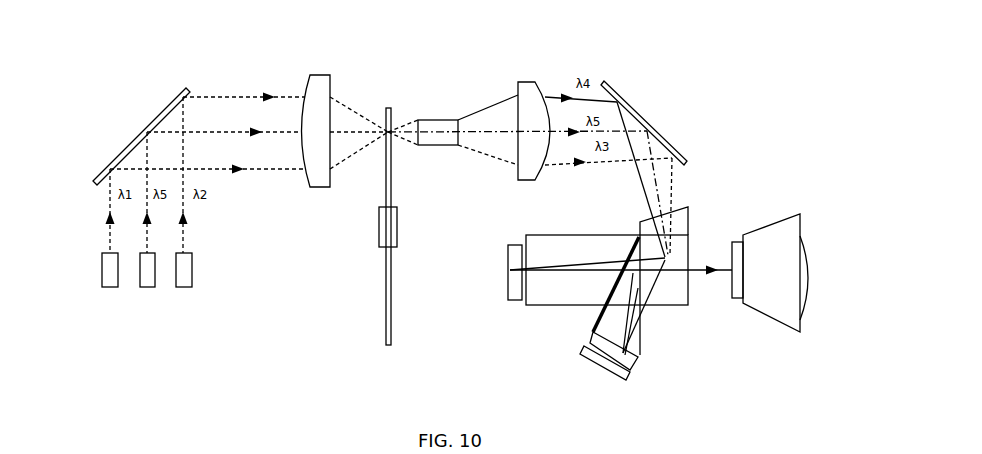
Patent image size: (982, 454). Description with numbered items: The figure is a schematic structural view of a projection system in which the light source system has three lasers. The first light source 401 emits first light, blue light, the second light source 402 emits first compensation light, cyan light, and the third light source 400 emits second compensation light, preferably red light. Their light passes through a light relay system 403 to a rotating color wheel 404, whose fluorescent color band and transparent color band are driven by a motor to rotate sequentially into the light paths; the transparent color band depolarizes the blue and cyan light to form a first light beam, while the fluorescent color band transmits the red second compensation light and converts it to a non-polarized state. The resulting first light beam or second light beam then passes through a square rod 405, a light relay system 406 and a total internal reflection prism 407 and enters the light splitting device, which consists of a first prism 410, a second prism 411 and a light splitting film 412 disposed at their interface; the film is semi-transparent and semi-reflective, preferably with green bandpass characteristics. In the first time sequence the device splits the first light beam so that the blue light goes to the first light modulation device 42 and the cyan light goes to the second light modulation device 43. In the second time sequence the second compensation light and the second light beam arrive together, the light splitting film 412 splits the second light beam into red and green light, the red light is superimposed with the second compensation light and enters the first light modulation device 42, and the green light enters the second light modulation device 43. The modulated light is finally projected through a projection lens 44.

The third light source 400 is at (151, 287).
The first light source 401 is at (107, 287).
The second light source 402 is at (184, 287).
The light relay system 403 is at (325, 84).
The rotating color wheel 404 is at (387, 323).
The square rod 405 is at (447, 120).
The light relay system 406 is at (527, 85).
The total internal reflection prism 407 is at (690, 207).
The first prism 410 is at (578, 237).
The second prism 411 is at (638, 355).
The light splitting film 412 is at (596, 326).
The first light modulation device 42 is at (516, 296).
The second light modulation device 43 is at (612, 363).
The projection lens 44 is at (810, 290).